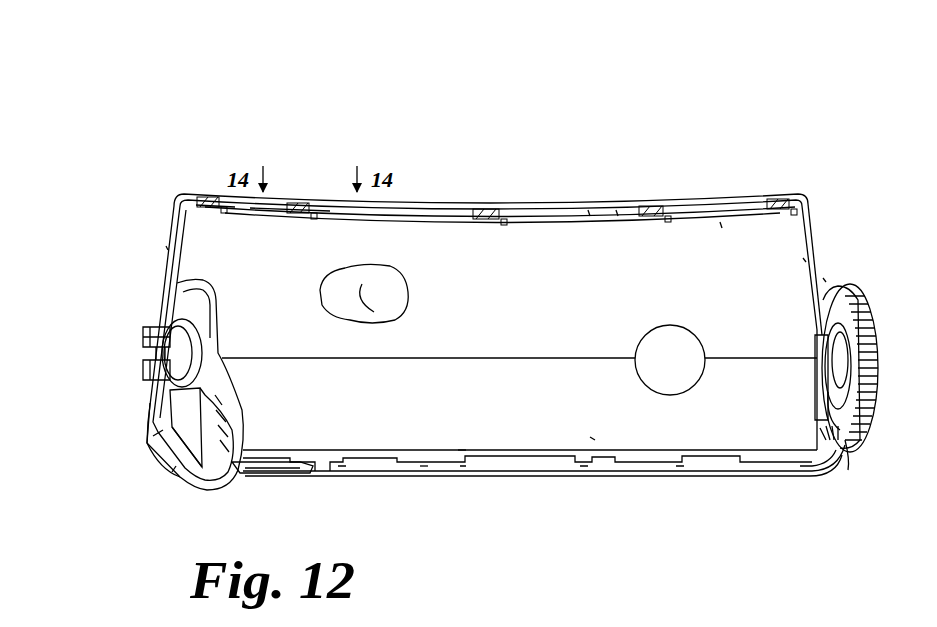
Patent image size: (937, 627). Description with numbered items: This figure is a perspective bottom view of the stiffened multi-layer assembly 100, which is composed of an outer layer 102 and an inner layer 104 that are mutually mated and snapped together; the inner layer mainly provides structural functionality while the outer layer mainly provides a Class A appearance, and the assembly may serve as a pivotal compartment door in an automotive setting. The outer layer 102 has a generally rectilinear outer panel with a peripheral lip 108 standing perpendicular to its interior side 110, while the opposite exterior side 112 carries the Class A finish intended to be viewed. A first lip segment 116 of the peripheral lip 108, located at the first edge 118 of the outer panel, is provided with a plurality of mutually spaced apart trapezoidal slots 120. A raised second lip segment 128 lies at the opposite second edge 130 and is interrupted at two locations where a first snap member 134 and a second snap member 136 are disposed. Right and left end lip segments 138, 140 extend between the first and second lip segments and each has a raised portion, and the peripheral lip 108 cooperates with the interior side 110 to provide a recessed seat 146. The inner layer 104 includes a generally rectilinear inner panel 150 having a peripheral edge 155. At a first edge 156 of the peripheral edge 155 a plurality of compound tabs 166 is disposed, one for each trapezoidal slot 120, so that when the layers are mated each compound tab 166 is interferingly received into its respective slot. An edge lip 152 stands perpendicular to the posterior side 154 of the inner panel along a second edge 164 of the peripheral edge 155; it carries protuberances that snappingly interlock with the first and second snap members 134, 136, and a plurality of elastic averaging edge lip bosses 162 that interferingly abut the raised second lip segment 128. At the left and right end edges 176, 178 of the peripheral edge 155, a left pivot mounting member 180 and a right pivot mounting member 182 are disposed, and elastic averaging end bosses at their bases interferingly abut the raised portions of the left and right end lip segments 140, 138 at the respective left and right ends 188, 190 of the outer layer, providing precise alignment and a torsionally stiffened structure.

The stiffened multi-layer assembly 100 is at (720, 108).
The outer layer 102 is at (808, 193).
The inner layer 104 is at (558, 212).
The peripheral lip 108 is at (438, 208).
The interior side 110 is at (377, 307).
The exterior side 112 is at (392, 296).
The first lip segment 116 is at (475, 205).
The first edge 118 is at (283, 196).
The trapezoidal slot 120 is at (205, 200).
The raised second lip segment 128 is at (493, 478).
The second edge 130 is at (523, 478).
The first snap member 134 is at (740, 484).
The second snap member 136 is at (283, 482).
The right end lip segment 138 is at (825, 278).
The left end lip segment 140 is at (167, 247).
The recessed seat 146 is at (805, 258).
The inner panel 150 is at (592, 437).
The edge lip 152 is at (423, 477).
The posterior side 154 is at (722, 222).
The peripheral edge 155 is at (618, 208).
The first edge 156 is at (590, 208).
The elastic averaging edge lip boss 162 is at (341, 474).
The second edge 164 is at (462, 450).
The compound tab 166 is at (447, 90).
The left end edge 176 is at (167, 388).
The right end edge 178 is at (830, 452).
The left pivot mounting member 180 is at (172, 472).
The right pivot mounting member 182 is at (872, 447).
The left end 188 is at (153, 433).
The right end 190 is at (848, 470).